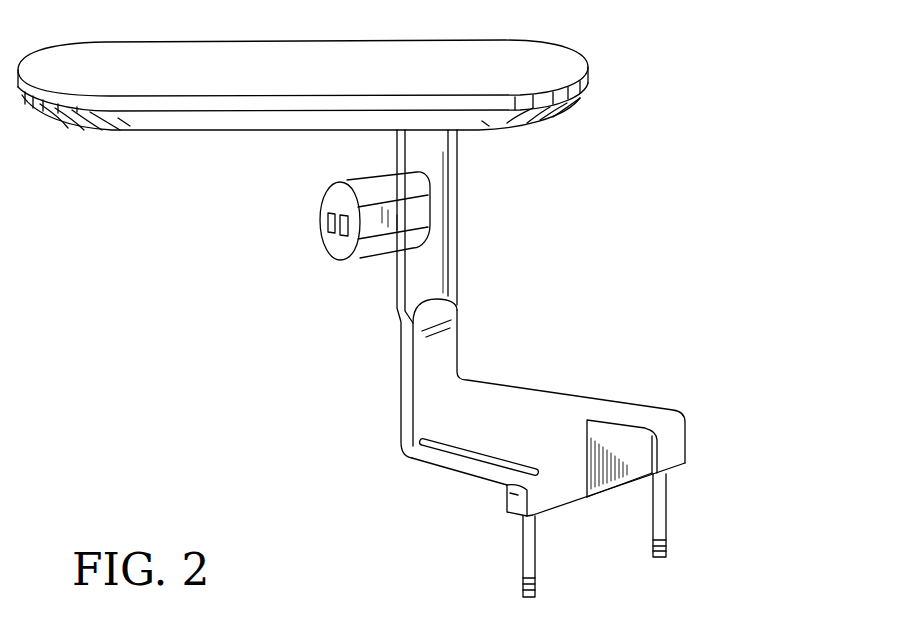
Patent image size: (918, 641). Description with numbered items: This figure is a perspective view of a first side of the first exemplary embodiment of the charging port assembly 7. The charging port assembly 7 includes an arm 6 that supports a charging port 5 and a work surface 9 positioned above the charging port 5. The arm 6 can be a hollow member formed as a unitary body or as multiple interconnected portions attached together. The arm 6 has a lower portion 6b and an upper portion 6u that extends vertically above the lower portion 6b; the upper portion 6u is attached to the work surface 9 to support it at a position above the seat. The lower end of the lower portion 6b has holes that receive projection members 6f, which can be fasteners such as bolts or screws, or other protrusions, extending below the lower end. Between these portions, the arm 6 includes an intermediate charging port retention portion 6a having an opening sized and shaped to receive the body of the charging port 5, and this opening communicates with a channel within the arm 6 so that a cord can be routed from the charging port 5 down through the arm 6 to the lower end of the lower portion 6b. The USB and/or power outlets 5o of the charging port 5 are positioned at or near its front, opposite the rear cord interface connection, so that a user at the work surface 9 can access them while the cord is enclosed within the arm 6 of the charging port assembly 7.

The work surface 9 is at (546, 54).
The arm 6 is at (577, 363).
The upper portion 6u is at (453, 155).
The intermediate charging port retention portion 6a is at (420, 213).
The lower portion 6b is at (531, 409).
The projection members 6f is at (667, 537).
The charging port 5 is at (299, 259).
The USB and/or power outlets 5o is at (328, 229).
The charging port assembly 7 is at (290, 223).